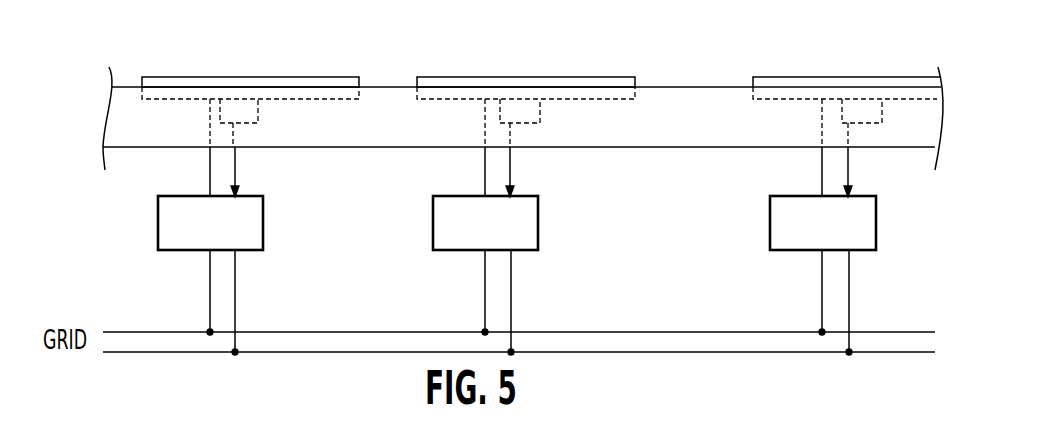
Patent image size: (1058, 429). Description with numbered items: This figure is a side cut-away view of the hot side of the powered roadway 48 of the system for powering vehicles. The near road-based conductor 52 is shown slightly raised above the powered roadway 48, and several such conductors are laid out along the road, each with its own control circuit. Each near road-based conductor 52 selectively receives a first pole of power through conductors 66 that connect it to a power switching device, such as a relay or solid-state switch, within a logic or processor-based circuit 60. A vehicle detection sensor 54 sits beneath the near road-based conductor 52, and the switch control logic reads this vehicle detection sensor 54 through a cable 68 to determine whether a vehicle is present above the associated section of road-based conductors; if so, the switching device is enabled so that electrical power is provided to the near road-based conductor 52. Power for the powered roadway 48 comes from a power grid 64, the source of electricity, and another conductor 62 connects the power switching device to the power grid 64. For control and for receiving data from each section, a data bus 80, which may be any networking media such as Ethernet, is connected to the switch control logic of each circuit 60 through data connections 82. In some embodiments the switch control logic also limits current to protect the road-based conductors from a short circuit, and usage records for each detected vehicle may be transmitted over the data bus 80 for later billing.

The powered roadway 48 is at (368, 136).
The near road-based conductor 52 is at (290, 77).
The vehicle detection sensor 54 is at (250, 124).
The logic or processor-based circuit 60 is at (264, 226).
The conductor 62 is at (208, 278).
The power grid 64 is at (129, 331).
The conductors 66 is at (208, 161).
The cable 68 is at (237, 152).
The data bus 80 is at (252, 353).
The data connections 82 is at (238, 278).